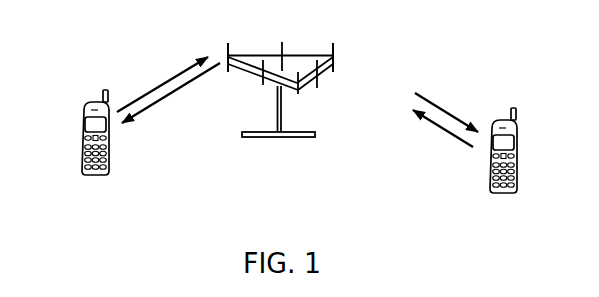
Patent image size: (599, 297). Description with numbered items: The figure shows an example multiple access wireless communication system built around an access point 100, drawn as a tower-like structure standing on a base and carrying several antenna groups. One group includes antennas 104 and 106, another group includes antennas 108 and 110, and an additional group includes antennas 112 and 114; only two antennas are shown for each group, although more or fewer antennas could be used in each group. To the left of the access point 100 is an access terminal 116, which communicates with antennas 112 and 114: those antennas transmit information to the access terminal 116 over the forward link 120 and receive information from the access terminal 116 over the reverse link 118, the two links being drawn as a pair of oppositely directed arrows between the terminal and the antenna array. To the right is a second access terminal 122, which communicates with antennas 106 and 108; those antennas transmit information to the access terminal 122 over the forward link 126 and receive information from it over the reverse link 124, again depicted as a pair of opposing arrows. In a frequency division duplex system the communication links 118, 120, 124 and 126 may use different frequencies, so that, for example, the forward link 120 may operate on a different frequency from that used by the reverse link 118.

The access point 100 is at (288, 137).
The antenna 104 is at (300, 92).
The antenna 106 is at (319, 85).
The antenna 108 is at (335, 69).
The antenna 110 is at (283, 50).
The antenna 112 is at (225, 47).
The antenna 114 is at (262, 86).
The access terminal 116 is at (81, 114).
The reverse link 118 is at (170, 75).
The forward link 120 is at (160, 105).
The access terminal 122 is at (519, 140).
The reverse link 124 is at (450, 135).
The forward link 126 is at (445, 112).